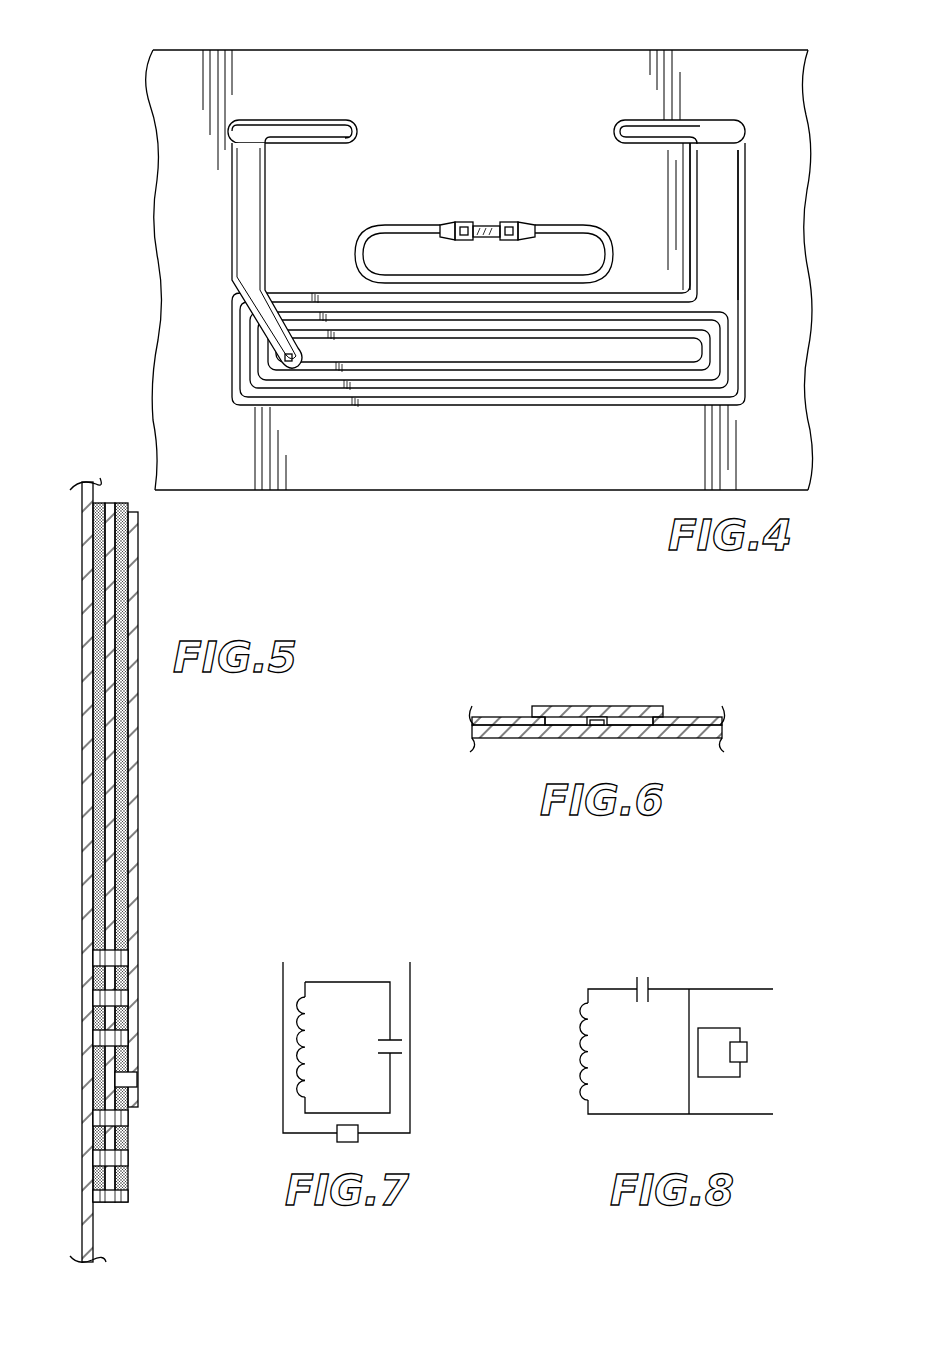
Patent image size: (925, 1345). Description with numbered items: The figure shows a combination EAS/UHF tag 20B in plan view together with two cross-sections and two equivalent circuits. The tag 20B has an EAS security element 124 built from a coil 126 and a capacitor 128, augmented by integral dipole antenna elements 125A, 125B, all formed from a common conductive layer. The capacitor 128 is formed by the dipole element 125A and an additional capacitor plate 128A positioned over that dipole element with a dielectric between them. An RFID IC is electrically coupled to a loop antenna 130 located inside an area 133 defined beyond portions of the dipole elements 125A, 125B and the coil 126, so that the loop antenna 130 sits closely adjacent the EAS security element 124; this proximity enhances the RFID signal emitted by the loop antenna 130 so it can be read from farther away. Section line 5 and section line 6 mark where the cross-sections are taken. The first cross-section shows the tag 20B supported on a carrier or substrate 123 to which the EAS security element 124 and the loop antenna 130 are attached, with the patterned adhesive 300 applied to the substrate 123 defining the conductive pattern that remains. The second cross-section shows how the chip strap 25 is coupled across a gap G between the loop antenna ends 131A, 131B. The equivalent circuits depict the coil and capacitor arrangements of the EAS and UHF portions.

In FIG. 4, the combination EAS/UHF tag 20B is at (600, 46).
In FIG. 4, the EAS security element 124 is at (212, 405).
In FIG. 5, the EAS security element 124 is at (165, 932).
In FIG. 4, the dipole antenna element 125A is at (314, 131).
In FIG. 4, the dipole antenna element 125B is at (643, 127).
In FIG. 4, the coil 126 is at (633, 406).
In FIG. 5, the coil 126 is at (141, 1170).
In FIG. 4, the capacitor 128 is at (226, 228).
In FIG. 4, the capacitor plate 128A is at (252, 227).
In FIG. 5, the capacitor plate 128A is at (120, 793).
In FIG. 4, the loop antenna 130 is at (612, 232).
In FIG. 4, the loop antenna end 131A is at (455, 221).
In FIG. 6, the loop antenna end 131A is at (518, 714).
In FIG. 4, the loop antenna end 131B is at (512, 221).
In FIG. 6, the loop antenna end 131B is at (688, 718).
In FIG. 4, the area 133 is at (662, 280).
In FIG. 4, the chip strap 25 is at (494, 220).
In FIG. 6, the chip strap 25 is at (612, 688).
In FIG. 4, the RFID IC is at (468, 222).
In FIG. 6, the RFID IC is at (595, 714).
In FIG. 4, the section line 5- 5 is at (247, 90).
In FIG. 4, the section line 6- 6 is at (433, 205).
In FIG. 5, the patterned adhesive 300 is at (88, 690).
In FIG. 5, the substrate 123 is at (85, 870).
In FIG. 6, the gap G is at (563, 727).